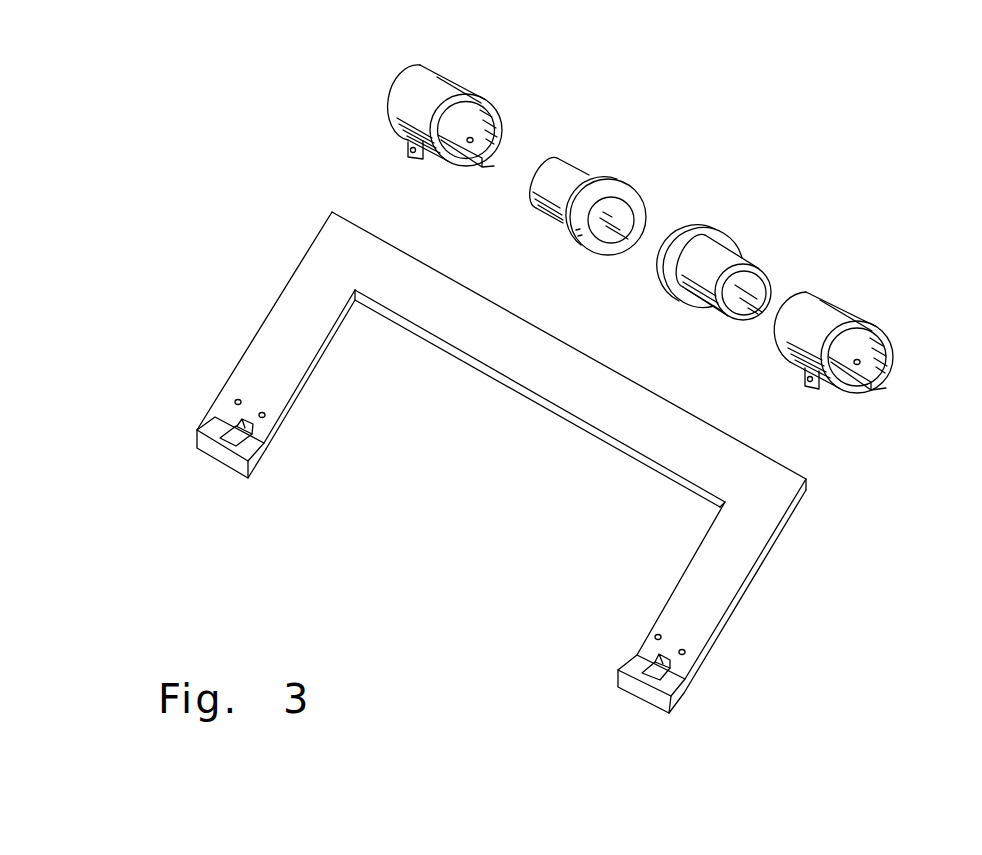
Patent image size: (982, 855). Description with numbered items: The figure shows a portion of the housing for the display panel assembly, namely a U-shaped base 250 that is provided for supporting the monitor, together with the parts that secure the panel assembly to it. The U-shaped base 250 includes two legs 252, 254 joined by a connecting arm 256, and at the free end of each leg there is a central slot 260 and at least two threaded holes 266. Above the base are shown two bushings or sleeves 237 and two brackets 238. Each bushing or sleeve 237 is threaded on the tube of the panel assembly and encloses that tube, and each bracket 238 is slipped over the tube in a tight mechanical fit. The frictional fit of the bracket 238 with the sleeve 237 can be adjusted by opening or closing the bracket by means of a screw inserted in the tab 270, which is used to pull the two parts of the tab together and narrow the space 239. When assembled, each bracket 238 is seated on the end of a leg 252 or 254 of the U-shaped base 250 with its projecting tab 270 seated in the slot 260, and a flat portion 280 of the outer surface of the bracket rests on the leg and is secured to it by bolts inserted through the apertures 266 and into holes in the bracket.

The bushing or sleeve 237 is at (592, 168).
The bracket 238 is at (447, 93).
The space 239 is at (479, 168).
The U-shaped base 250 is at (494, 463).
The leg 252 is at (313, 379).
The leg 254 is at (741, 590).
The connecting arm 256 is at (617, 372).
The central slot 260 is at (240, 432).
The threaded holes 266 is at (262, 412).
The tab 270 is at (410, 157).
The flat portion 280 is at (502, 166).